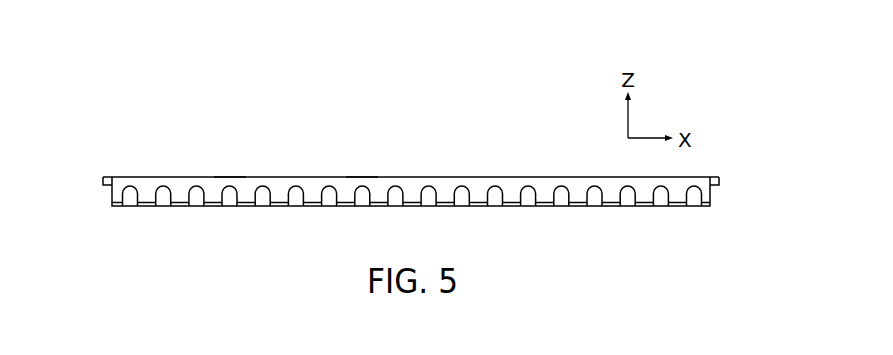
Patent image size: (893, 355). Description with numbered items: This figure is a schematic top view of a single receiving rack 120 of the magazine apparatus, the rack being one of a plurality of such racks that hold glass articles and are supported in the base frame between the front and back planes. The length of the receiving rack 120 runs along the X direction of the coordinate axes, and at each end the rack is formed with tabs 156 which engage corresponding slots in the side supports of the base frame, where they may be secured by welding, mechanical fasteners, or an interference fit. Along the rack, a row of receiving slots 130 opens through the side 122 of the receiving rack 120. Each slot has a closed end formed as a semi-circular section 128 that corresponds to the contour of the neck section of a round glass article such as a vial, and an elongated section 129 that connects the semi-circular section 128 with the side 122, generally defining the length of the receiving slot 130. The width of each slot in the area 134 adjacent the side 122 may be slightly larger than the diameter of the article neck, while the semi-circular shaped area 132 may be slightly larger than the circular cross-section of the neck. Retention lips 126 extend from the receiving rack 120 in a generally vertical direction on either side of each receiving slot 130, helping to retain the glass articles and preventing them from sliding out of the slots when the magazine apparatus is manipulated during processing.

The receiving rack 120 is at (192, 135).
The side 122 is at (446, 203).
The retention lips 126 is at (277, 203).
The semi-circular section 128 is at (232, 178).
The elongated section 129 is at (228, 203).
The receiving slots 130 is at (592, 212).
The semi-circular shaped area 132 is at (364, 178).
The area adjacent the side 134 is at (362, 203).
The tabs 156 is at (103, 177).